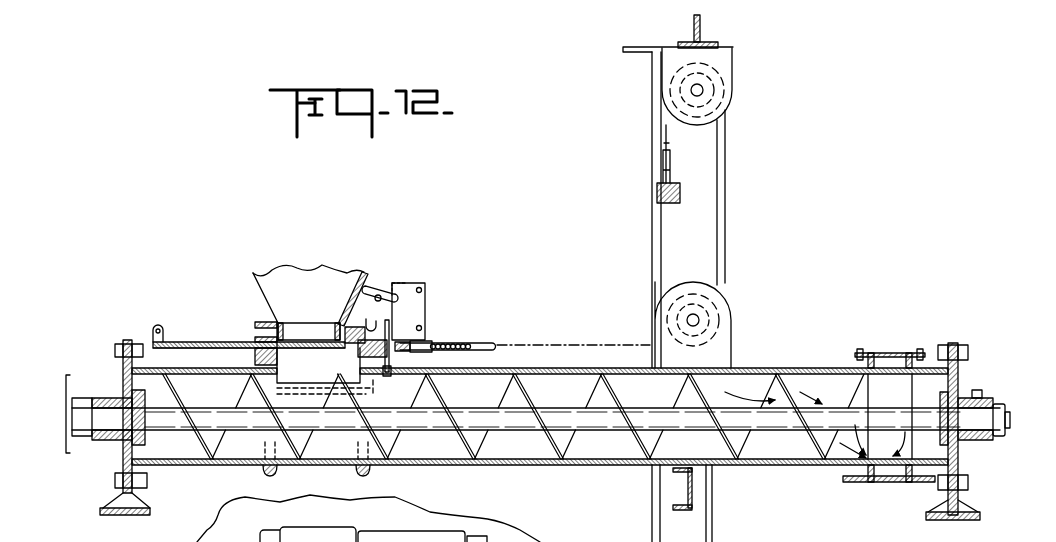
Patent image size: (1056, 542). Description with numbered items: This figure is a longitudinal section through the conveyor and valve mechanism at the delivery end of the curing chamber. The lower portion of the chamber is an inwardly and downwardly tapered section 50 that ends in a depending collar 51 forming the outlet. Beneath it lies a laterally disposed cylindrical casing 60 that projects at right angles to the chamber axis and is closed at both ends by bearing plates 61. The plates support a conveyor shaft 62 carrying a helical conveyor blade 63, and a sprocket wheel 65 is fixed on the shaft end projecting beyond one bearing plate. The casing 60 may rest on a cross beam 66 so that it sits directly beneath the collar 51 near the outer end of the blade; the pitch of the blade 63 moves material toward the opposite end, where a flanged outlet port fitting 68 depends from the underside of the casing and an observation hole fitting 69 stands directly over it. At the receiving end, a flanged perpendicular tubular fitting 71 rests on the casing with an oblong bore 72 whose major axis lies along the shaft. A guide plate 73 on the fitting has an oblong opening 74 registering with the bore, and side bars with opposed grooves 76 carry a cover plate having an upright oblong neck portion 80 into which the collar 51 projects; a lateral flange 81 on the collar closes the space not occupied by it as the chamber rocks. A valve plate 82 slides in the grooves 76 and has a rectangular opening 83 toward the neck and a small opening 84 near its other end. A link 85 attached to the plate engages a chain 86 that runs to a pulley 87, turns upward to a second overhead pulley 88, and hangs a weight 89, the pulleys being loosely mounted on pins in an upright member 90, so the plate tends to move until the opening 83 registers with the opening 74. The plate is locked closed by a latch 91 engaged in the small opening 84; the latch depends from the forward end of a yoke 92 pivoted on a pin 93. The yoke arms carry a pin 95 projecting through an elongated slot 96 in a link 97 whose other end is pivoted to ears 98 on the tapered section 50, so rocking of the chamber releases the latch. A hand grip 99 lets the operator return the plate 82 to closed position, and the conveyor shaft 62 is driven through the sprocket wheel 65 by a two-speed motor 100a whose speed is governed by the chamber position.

The tapered section 50 is at (318, 272).
The collar 51 is at (306, 323).
The cylindrical casing 60 is at (592, 368).
The bearing plates 61 is at (122, 370).
The conveyor shaft 62 is at (110, 420).
The helical conveyor blade 63 is at (456, 466).
The sprocket wheel 65 is at (67, 455).
The cross beam 66 is at (695, 497).
The flanged outlet port fitting 68 is at (880, 482).
The observation hole fitting 69 is at (892, 353).
The flanged perpendicular tubular fitting 71 is at (258, 360).
The bore 72 is at (325, 358).
The guide plate 73 is at (184, 342).
The oblong opening 74 is at (354, 348).
The grooves 76 is at (478, 343).
The neck portion 80 is at (366, 316).
The lateral flange 81 is at (262, 323).
The valve plate 82 is at (405, 351).
The rectangular opening 83 is at (236, 342).
The small opening 84 is at (386, 376).
The link 85 is at (440, 340).
The chain 86 is at (451, 360).
The pulley 87 is at (723, 312).
The second overhead pulley 88 is at (727, 88).
The weight 89 is at (674, 205).
The upright member 90 is at (652, 238).
The latch 91 is at (399, 340).
The yoke 92 is at (426, 300).
The pin 93 is at (423, 326).
The pin 95 is at (421, 288).
The elongated slot 96 is at (408, 283).
The link 97 is at (386, 295).
The ears 98 is at (361, 272).
The hand grip 99 is at (157, 325).
The two-speed motor 100a is at (326, 531).